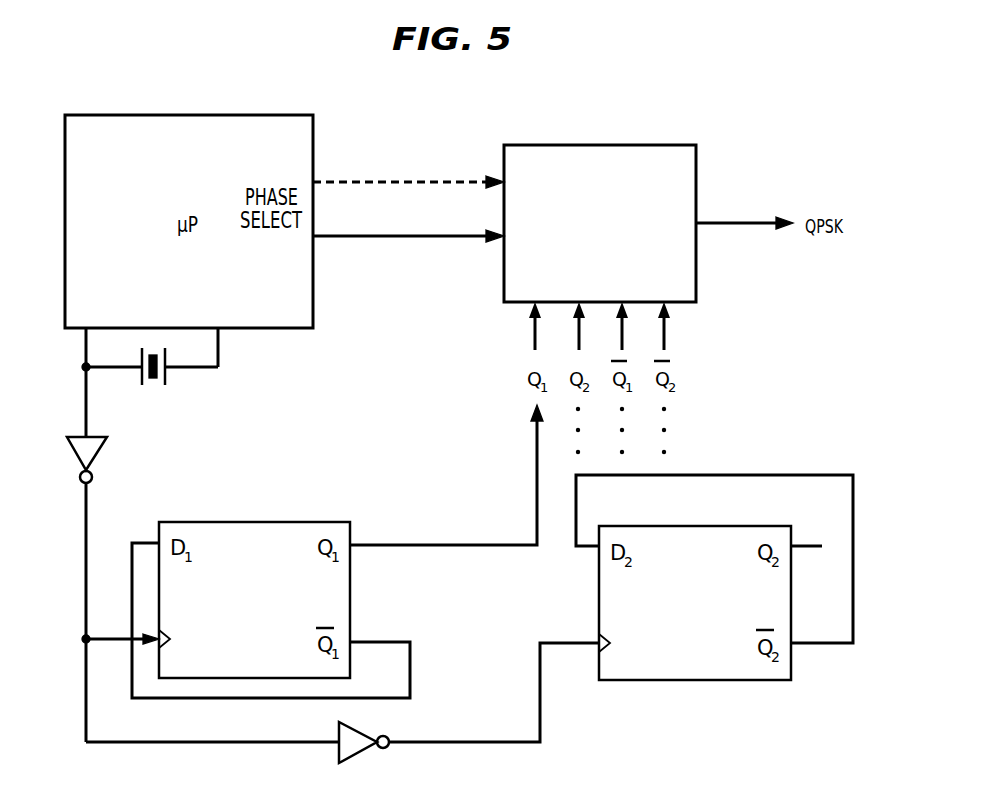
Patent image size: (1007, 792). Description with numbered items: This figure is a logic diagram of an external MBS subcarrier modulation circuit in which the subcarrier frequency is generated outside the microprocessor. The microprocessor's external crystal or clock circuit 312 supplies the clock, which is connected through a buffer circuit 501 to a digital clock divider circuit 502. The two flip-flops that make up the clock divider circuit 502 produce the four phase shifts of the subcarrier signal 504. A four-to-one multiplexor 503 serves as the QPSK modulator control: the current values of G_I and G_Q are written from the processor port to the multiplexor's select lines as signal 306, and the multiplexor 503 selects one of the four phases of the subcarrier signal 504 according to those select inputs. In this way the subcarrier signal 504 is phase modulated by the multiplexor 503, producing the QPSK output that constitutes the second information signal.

The select signal 306 is at (338, 237).
The external crystal or clock circuit 312 is at (148, 385).
The buffer circuit 501 is at (97, 455).
The digital clock divider circuit 502 is at (363, 731).
The 4-to-1 multiplexor 503 is at (696, 181).
The subcarrier signal 504 is at (537, 497).